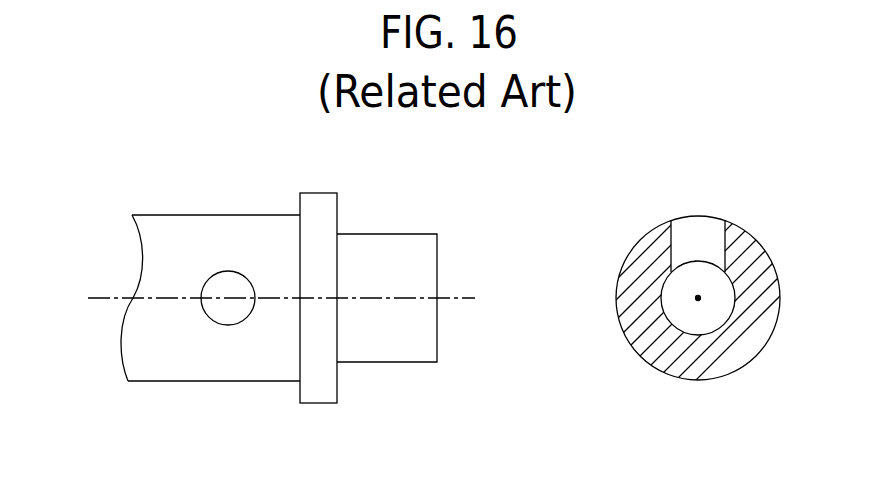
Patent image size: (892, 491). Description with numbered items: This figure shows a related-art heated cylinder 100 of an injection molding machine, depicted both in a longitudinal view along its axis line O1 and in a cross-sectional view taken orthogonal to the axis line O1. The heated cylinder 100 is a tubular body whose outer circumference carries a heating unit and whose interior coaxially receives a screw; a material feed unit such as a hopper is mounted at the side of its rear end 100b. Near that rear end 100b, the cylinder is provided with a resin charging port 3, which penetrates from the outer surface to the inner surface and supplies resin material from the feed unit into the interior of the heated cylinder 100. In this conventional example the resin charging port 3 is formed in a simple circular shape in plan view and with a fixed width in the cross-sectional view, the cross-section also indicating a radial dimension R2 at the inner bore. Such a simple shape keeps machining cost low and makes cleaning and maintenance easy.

The heated cylinder 100 is at (254, 206).
The rear end 100b is at (438, 252).
The resin charging port 3 is at (212, 264).
The radius of inner circle R2 is at (712, 250).
The axis line O1 is at (697, 303).